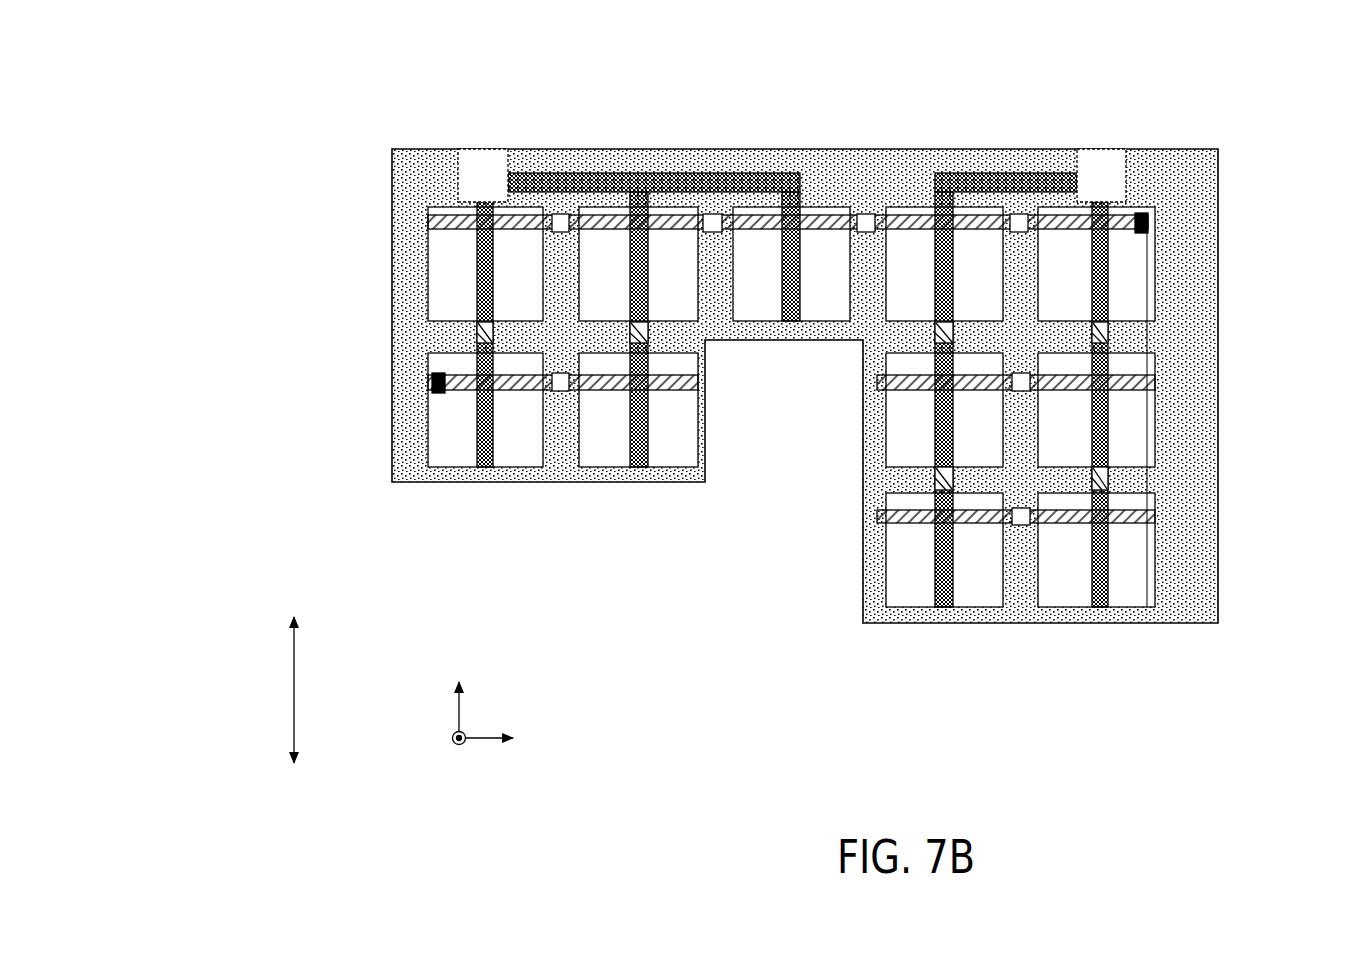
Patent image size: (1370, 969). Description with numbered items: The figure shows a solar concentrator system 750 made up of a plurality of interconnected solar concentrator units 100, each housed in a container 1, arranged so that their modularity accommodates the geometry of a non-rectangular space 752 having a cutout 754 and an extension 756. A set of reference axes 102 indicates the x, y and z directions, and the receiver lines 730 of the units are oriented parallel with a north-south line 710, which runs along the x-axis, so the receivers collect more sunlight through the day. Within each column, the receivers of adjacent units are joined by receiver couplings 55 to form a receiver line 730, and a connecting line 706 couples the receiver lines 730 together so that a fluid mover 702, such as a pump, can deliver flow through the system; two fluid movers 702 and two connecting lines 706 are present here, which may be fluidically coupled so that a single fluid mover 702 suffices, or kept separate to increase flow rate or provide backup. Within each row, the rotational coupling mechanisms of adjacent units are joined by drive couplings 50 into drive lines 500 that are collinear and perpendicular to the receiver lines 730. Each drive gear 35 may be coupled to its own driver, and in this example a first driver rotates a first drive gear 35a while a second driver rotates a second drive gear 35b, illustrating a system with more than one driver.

The solar concentrator system 750 is at (385, 60).
The space 752 is at (838, 148).
The cutout 754 is at (812, 458).
The extension 756 is at (1183, 647).
The container 1 is at (427, 240).
The solar concentrator unit 100 is at (335, 227).
The receiver line 730 is at (477, 280).
The receiver coupling 55 is at (639, 330).
The drive line 500 is at (447, 213).
The drive coupling 50 is at (1030, 213).
The connecting line 706 is at (710, 172).
The fluid mover 702 is at (493, 150).
The first drive gear 35a is at (430, 392).
The second drive gear 35b is at (1150, 227).
The drive gear 35 is at (1245, 207).
The north-south line 710 is at (293, 707).
The reference axes 102 is at (503, 708).